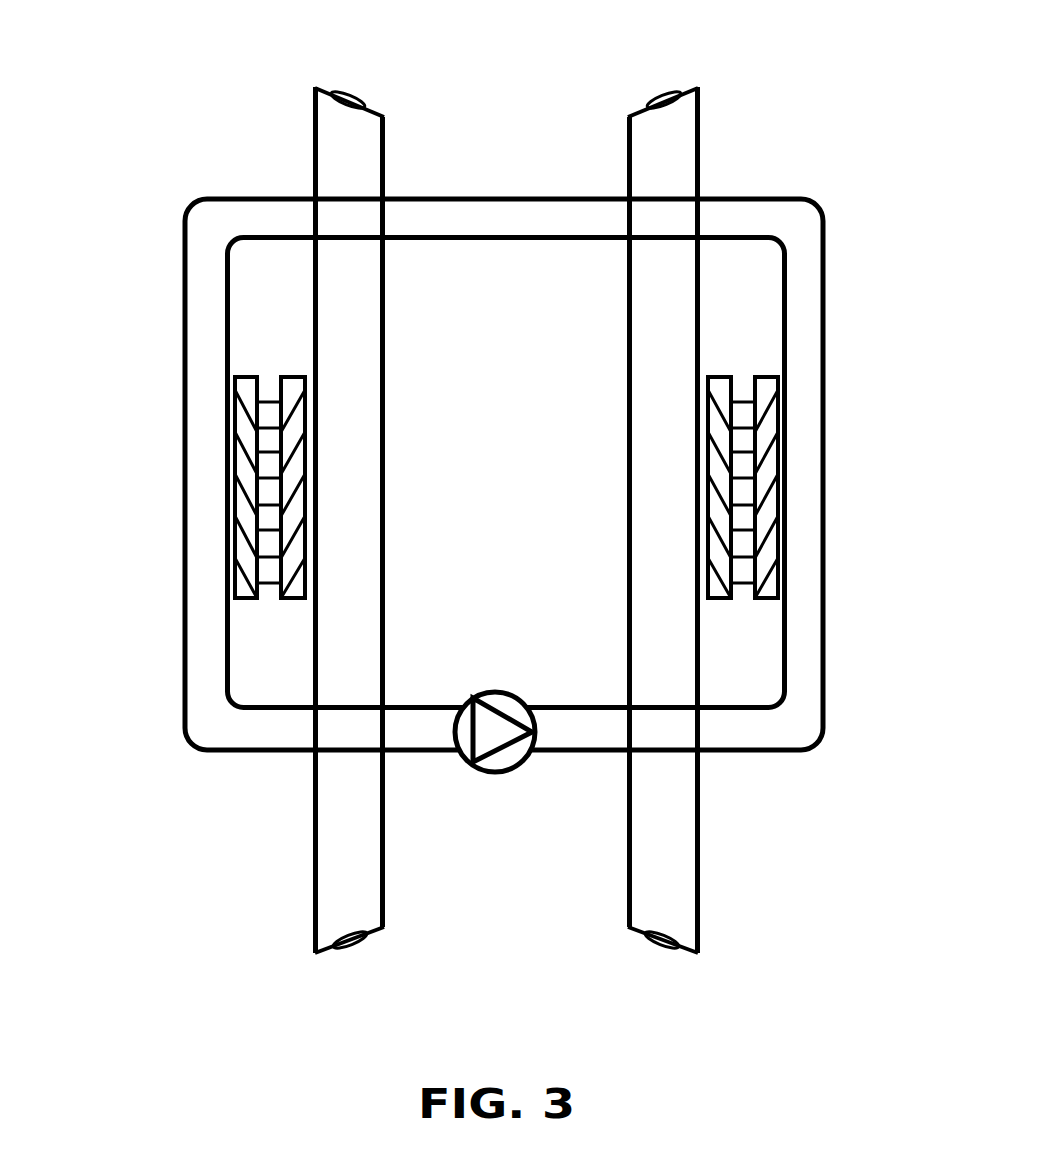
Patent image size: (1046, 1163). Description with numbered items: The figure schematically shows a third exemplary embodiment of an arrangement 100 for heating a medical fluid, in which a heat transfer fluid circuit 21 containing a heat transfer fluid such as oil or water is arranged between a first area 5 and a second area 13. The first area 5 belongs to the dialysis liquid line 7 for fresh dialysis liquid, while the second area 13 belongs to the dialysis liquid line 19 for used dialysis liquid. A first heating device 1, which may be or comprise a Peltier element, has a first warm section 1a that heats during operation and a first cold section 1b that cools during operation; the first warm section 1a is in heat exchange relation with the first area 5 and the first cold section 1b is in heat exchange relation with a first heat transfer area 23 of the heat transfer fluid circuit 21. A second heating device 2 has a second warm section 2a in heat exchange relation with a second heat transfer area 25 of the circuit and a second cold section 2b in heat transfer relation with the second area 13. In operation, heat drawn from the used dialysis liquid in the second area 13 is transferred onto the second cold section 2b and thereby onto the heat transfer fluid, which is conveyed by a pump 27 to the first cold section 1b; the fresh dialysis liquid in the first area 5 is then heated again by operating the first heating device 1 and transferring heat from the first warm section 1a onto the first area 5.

The arrangement 100 is at (524, 128).
The first heating device 1 is at (743, 499).
The first warm section 1a is at (722, 382).
The first cold section 1b is at (764, 380).
The second heating device 2 is at (270, 499).
The second warm section 2a is at (250, 382).
The second cold section 2b is at (292, 380).
The first area 5 is at (648, 520).
The dialysis liquid line for fresh dialysis liquid 7 is at (690, 883).
The second area 13 is at (392, 520).
The dialysis liquid line for used dialysis liquid 19 is at (365, 882).
The heat transfer fluid circuit 21 is at (205, 680).
The first heat transfer area 23 is at (792, 503).
The second heat transfer area 25 is at (222, 480).
The pump 27 is at (515, 753).